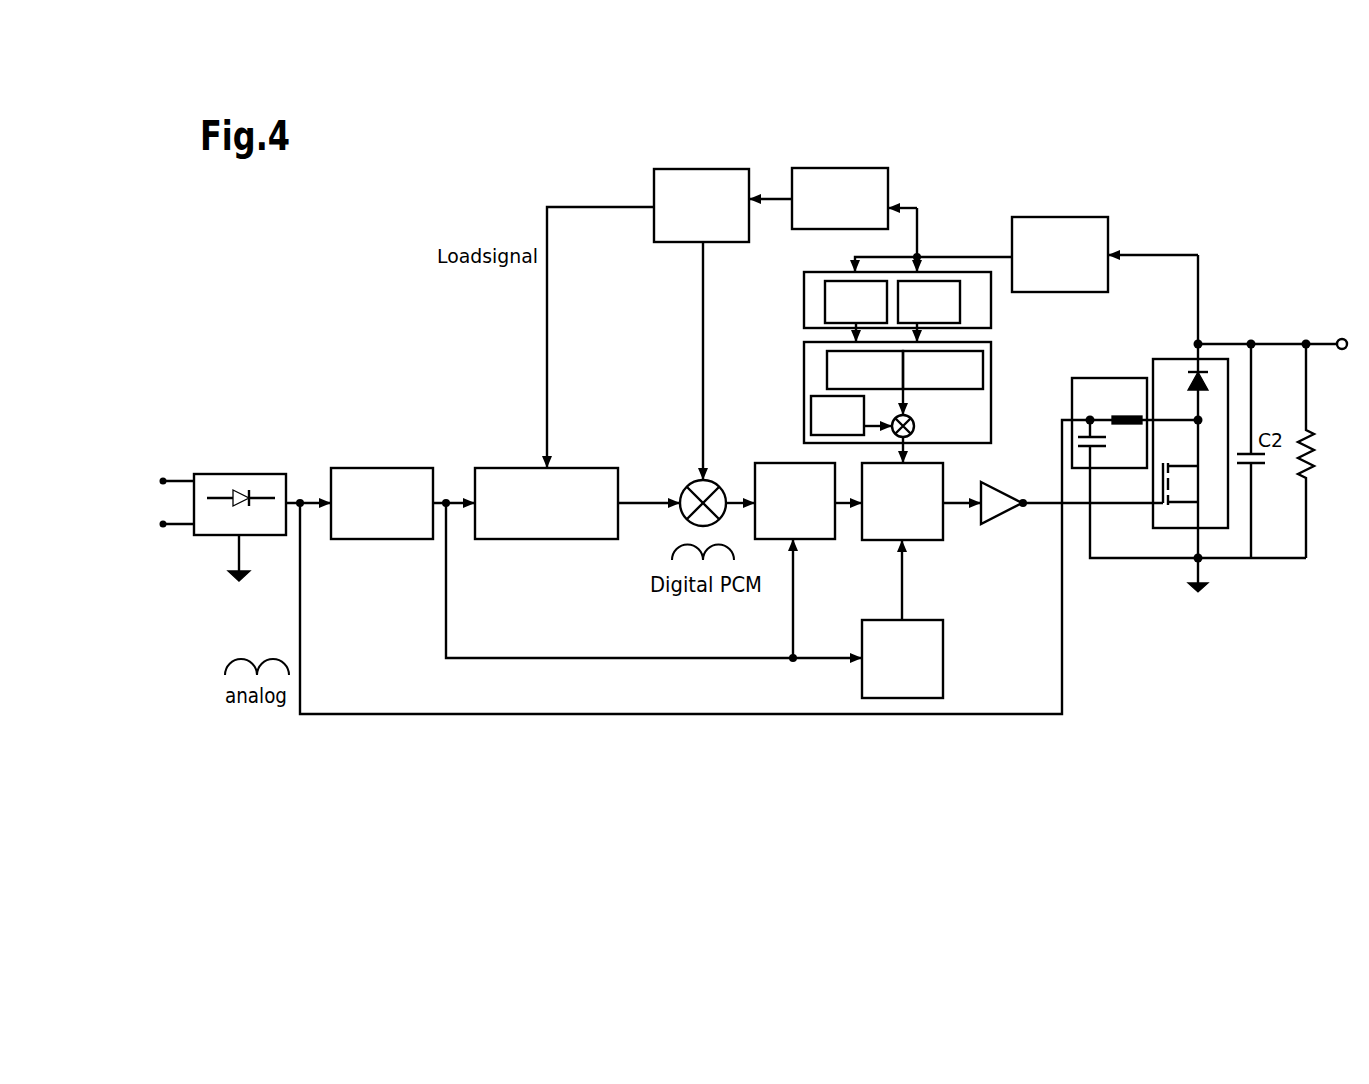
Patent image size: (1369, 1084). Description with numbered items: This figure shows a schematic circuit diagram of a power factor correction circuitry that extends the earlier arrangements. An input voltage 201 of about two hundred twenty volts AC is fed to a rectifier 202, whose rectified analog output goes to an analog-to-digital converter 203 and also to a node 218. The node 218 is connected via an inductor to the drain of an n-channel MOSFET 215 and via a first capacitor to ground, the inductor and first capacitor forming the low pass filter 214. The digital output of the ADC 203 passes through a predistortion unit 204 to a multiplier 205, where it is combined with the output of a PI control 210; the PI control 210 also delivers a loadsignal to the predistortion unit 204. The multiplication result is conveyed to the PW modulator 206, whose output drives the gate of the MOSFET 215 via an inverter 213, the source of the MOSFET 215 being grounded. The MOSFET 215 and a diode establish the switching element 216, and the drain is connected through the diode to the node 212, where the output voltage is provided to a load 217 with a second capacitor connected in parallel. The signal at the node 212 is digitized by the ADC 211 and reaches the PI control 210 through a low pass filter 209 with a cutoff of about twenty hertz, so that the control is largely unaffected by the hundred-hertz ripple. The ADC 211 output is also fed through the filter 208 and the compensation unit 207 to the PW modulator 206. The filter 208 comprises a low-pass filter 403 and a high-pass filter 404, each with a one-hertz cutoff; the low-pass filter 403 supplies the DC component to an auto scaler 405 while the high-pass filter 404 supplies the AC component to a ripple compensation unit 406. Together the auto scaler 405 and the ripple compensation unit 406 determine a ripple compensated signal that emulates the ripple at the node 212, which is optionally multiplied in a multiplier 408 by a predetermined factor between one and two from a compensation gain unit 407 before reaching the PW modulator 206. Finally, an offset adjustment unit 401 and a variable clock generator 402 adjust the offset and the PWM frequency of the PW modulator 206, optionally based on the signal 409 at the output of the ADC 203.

The input voltage 201 is at (123, 507).
The rectifier 202 is at (245, 474).
The analog-to-digital converter 203 is at (383, 468).
The predistortion unit 204 is at (498, 468).
The multiplier 205 is at (688, 482).
The PW modulator 206 is at (920, 540).
The compensation unit 207 is at (868, 402).
The filter 208 is at (868, 307).
The low pass filter 209 is at (888, 192).
The PI control 210 is at (654, 228).
The ADC 211 is at (1085, 217).
The node 212 is at (1272, 331).
The inverter 213 is at (990, 522).
The low pass filter 214 is at (1126, 445).
The n-channel MOSFET 215 is at (1180, 483).
The switching element 216 is at (1181, 452).
The load 217 is at (1326, 451).
The node 218 is at (1136, 475).
The offset adjustment unit 401 is at (815, 539).
The variable clock generator 402 is at (943, 640).
The low-pass filter 403 is at (856, 302).
The high-pass filter 404 is at (929, 302).
The auto scaler 405 is at (865, 370).
The ripple compensation unit 406 is at (943, 370).
The compensation gain unit 407 is at (837, 415).
The multiplier 408 is at (914, 426).
The signal 409 is at (654, 582).